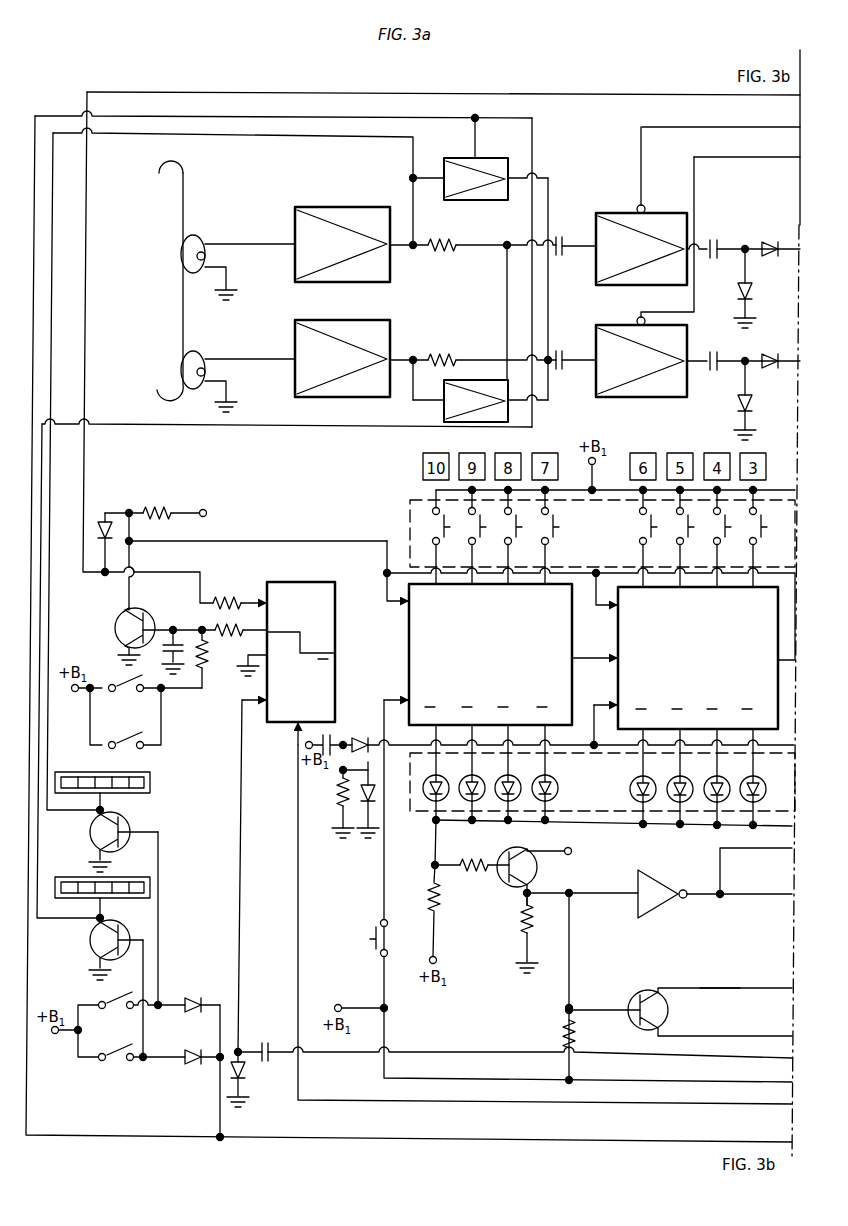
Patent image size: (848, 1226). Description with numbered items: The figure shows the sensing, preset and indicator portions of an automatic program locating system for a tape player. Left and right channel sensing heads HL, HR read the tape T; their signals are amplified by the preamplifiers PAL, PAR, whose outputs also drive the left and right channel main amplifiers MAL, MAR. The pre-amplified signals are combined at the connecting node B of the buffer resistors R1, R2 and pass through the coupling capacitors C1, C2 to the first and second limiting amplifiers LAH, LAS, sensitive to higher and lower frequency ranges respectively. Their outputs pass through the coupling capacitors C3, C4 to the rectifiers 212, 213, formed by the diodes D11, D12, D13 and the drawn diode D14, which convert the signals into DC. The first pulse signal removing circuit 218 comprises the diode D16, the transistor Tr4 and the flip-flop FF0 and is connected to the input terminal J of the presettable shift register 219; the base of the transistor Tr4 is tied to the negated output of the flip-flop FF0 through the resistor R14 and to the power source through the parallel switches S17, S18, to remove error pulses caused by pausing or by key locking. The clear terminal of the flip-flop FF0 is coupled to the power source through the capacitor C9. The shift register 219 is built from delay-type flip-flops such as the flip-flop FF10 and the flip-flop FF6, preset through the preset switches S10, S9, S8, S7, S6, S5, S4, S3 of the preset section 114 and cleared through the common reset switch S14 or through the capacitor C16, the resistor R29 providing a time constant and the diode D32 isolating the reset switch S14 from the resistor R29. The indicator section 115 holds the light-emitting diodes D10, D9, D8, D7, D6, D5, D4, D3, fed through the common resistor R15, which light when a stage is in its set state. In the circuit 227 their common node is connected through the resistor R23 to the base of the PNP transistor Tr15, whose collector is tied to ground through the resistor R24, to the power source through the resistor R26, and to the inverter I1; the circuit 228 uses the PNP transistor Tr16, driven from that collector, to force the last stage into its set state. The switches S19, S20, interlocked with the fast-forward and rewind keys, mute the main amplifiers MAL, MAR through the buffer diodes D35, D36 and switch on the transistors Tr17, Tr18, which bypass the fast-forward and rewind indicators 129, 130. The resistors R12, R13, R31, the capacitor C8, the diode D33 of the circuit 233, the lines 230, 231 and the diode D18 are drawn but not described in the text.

The tape T is at (183, 213).
The left channel sensing head HL is at (198, 235).
The right channel sensing head HR is at (198, 351).
The left channel preamplifier PAL is at (357, 207).
The right channel preamplifier PAR is at (359, 320).
The left channel main amplifier MAL is at (472, 200).
The right channel main amplifier MAR is at (470, 422).
The buffer resistor R1 is at (441, 239).
The buffer resistor R2 is at (441, 354).
The connecting node B is at (505, 332).
The coupling capacitor C1 is at (556, 237).
The coupling capacitor C2 is at (556, 336).
The first limiting amplifier LAH is at (626, 204).
The second limiting amplifier LAS is at (626, 316).
The coupling capacitor C3 is at (710, 240).
The coupling capacitor C4 is at (710, 370).
The rectifier 212 is at (762, 238).
The rectifier 213 is at (762, 359).
The diode D11 is at (737, 300).
The diode D12 is at (774, 258).
The diode D13 is at (737, 411).
The diode D14 is at (774, 371).
The diode D16 is at (100, 528).
The resistor R12 is at (147, 510).
The first pulse signal removing circuit 218 is at (246, 576).
The presettable shift register 219 is at (356, 539).
The resistor R13 is at (240, 599).
The resistor R14 is at (224, 619).
The transistor Tr4 is at (117, 618).
The capacitor C8 is at (191, 654).
The resistor R31 is at (208, 661).
The switch S17 is at (128, 690).
The switch S18 is at (128, 747).
The flip-flop FF0 is at (298, 582).
The input terminal J is at (385, 578).
The preset section 114 is at (410, 503).
The preset switch S10 is at (439, 537).
The preset switch S9 is at (476, 537).
The preset switch S8 is at (512, 537).
The preset switch S7 is at (549, 537).
The preset switch S6 is at (651, 538).
The preset switch S5 is at (688, 538).
The preset switch S4 is at (725, 538).
The preset switch S3 is at (761, 538).
The delay-type flip-flop FF10 is at (410, 687).
The delay-type flip-flop FF6 is at (618, 645).
The capacitor C16 is at (332, 754).
The diode D32 is at (366, 744).
The diode D33 is at (372, 800).
The resistor R29 is at (340, 811).
The differentiating circuit 233 is at (374, 862).
The indicator section 115 is at (418, 813).
The light-emitting diode D10 is at (433, 774).
The light-emitting diode D9 is at (470, 774).
The light-emitting diode D8 is at (507, 774).
The light-emitting diode D7 is at (544, 774).
The light-emitting diode D6 is at (643, 778).
The light-emitting diode D5 is at (680, 778).
The light-emitting diode D4 is at (717, 779).
The light-emitting diode D3 is at (753, 779).
The common resistor R15 is at (439, 896).
The resistor R23 is at (454, 865).
The PNP transistor Tr15 is at (544, 878).
The resistor R24 is at (534, 920).
The additional circuit 227 is at (507, 922).
The resistor R26 is at (566, 1026).
The inverter I1 is at (656, 874).
The PNP transistor Tr16 is at (680, 1012).
The circuit 228 is at (730, 988).
The reset switch S14 is at (372, 932).
The indicator 129 is at (150, 783).
The indicator 130 is at (150, 888).
The transistor Tr17 is at (92, 832).
The transistor Tr18 is at (92, 940).
The line 230 is at (145, 854).
The switch S19 is at (110, 994).
The switch S20 is at (118, 1066).
The buffer diode D35 is at (194, 997).
The buffer diode D36 is at (184, 1054).
The line 231 is at (214, 1068).
The capacitor C9 is at (263, 1042).
The diode D18 is at (242, 1074).